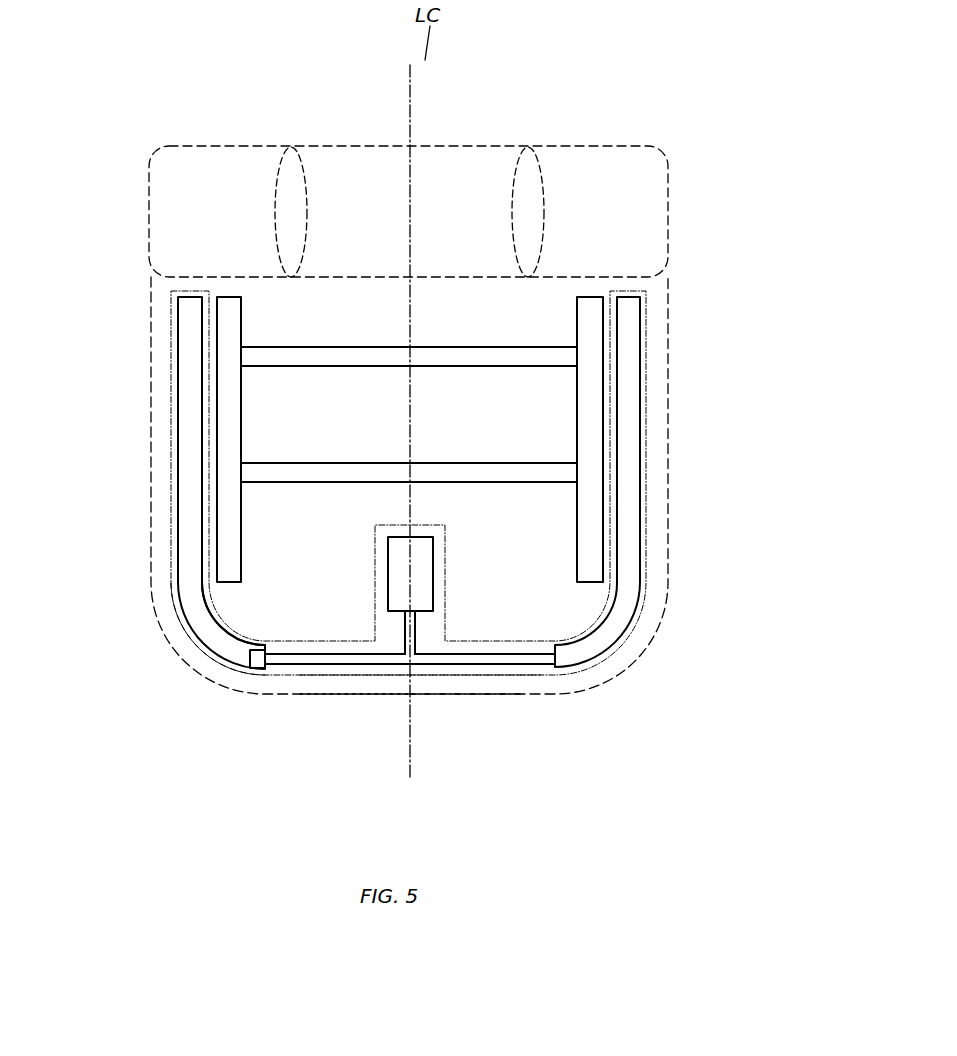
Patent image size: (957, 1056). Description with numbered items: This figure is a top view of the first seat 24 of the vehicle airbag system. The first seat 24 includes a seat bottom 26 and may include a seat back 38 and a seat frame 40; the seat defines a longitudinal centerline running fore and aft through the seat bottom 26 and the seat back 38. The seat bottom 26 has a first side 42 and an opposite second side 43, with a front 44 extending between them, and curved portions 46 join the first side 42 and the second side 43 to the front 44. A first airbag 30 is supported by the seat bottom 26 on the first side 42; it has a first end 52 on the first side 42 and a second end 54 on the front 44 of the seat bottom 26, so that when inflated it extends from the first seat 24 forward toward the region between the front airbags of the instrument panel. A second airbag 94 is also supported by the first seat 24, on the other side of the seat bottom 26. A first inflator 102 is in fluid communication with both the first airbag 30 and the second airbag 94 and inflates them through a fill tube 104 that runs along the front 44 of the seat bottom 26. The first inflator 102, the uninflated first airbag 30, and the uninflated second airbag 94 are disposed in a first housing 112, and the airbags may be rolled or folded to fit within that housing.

The first seat 24 is at (697, 120).
The seat bottom 26 is at (150, 467).
The first airbag 30 is at (203, 627).
The seat back 38 is at (225, 188).
The seat frame 40 is at (232, 408).
The first side 42 is at (150, 530).
The second side 43 is at (670, 465).
The front 44 is at (462, 695).
The curved portions 46 is at (193, 675).
The first end 52 is at (190, 331).
The second end 54 is at (248, 662).
The second airbag 94 is at (615, 627).
The first inflator 102 is at (423, 566).
The fill tube 104 is at (343, 658).
The first housing 112 is at (512, 677).